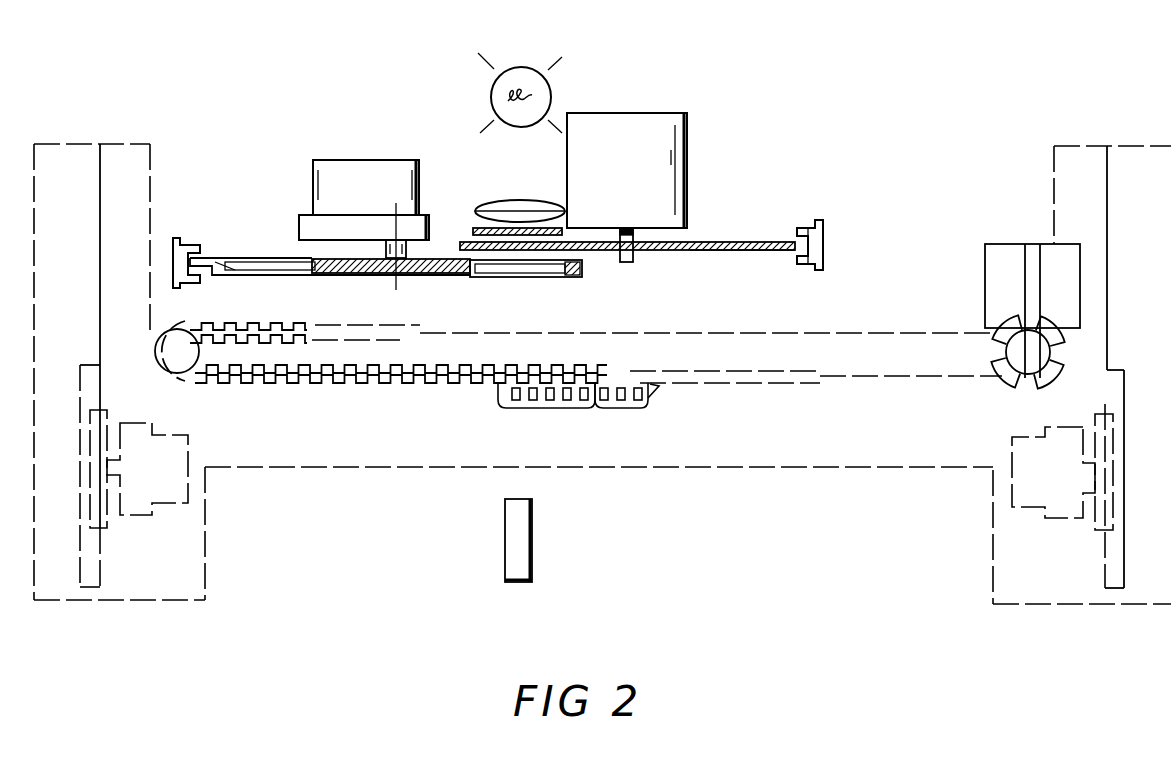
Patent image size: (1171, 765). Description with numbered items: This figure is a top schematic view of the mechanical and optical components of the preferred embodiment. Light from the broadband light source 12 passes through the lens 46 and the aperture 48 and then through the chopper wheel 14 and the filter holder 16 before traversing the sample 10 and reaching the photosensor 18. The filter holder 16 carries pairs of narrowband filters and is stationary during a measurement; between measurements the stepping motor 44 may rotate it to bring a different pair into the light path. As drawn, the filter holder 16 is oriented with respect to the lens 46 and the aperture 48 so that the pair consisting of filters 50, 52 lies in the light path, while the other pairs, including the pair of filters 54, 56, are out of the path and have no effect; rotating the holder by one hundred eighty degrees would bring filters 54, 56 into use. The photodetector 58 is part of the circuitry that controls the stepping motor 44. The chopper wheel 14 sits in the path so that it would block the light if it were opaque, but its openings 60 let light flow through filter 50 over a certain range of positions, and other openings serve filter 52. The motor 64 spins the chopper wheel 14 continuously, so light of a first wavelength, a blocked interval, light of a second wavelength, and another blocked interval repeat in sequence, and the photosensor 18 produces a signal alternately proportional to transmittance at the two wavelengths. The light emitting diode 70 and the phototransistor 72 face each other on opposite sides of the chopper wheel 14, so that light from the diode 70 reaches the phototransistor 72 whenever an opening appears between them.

The sample 10 is at (518, 398).
The broadband light source 12 is at (527, 67).
The chopper wheel 14 is at (753, 243).
The filter holder 16 is at (418, 280).
The photosensor 18 is at (505, 582).
The stepping motor 44 is at (353, 160).
The lens 46 is at (507, 200).
The aperture 48 is at (476, 232).
The filter 50 is at (540, 278).
The filter 52 is at (492, 278).
The filter 54 is at (250, 278).
The filter 56 is at (292, 278).
The photodetector 58 is at (178, 240).
The openings 60 is at (708, 251).
The motor 64 is at (648, 113).
The light emitting diode 70 is at (800, 228).
The phototransistor 72 is at (805, 268).